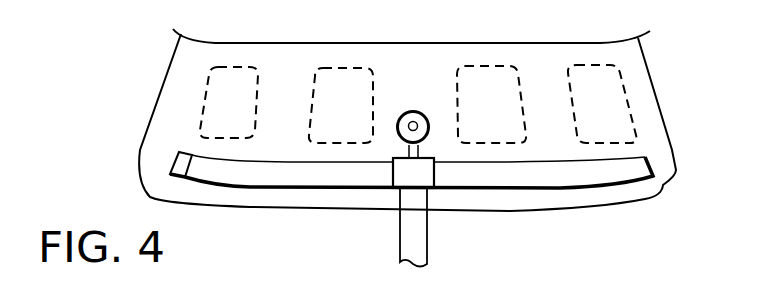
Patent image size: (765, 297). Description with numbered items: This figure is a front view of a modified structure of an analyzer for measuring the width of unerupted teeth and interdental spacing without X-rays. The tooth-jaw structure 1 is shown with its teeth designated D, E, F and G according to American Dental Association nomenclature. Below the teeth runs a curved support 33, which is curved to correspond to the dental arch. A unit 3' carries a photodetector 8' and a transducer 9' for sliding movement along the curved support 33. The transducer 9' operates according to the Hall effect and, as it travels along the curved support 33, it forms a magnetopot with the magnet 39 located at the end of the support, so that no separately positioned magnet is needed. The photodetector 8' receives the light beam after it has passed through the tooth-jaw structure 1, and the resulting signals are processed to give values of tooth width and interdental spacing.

The tooth-jaw structure 1 is at (170, 77).
The curved support 33 is at (594, 178).
The magnet 39 is at (172, 174).
The photodetector 8' is at (430, 85).
The transducer 9' is at (393, 198).
The unit 3' is at (437, 227).